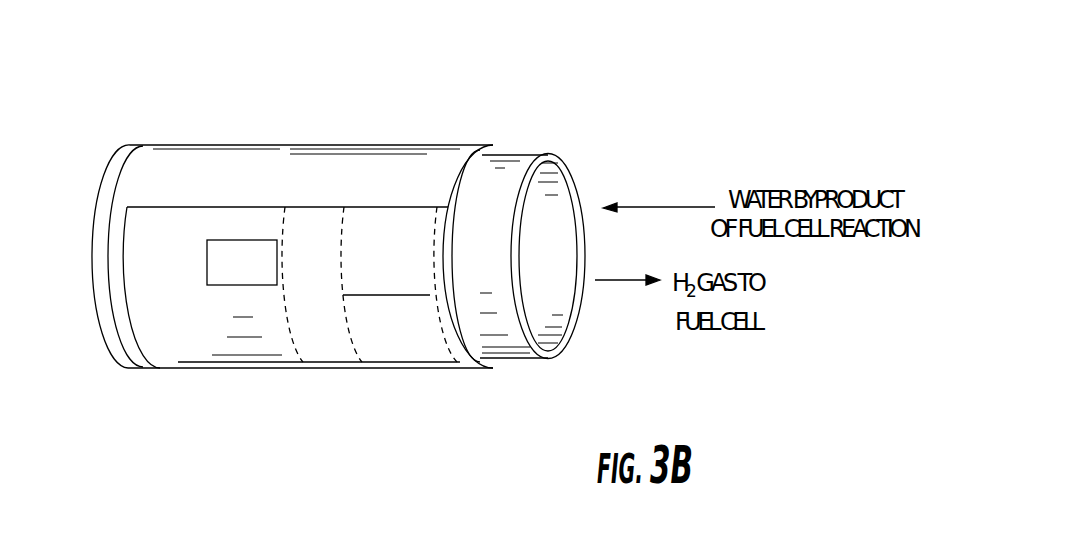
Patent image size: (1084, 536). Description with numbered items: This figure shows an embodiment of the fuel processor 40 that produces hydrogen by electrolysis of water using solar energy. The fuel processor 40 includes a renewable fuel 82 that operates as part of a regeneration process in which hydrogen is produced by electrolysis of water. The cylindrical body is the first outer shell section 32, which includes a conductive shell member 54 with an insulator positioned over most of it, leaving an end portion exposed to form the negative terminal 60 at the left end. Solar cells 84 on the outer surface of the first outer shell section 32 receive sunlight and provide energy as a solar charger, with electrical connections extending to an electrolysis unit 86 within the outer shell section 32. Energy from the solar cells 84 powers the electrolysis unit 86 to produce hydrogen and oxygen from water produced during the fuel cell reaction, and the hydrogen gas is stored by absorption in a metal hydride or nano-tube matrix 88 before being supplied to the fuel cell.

The first outer shell section 32 is at (219, 125).
The negative terminal 60 is at (118, 148).
The conductive shell member 54 is at (333, 145).
The fuel processor 40 is at (511, 147).
The renewable fuel 82 is at (548, 153).
The solar cells 84 is at (213, 258).
The electrolysis unit 86 is at (323, 363).
The metal hydride or nano-tube matrix 88 is at (442, 364).